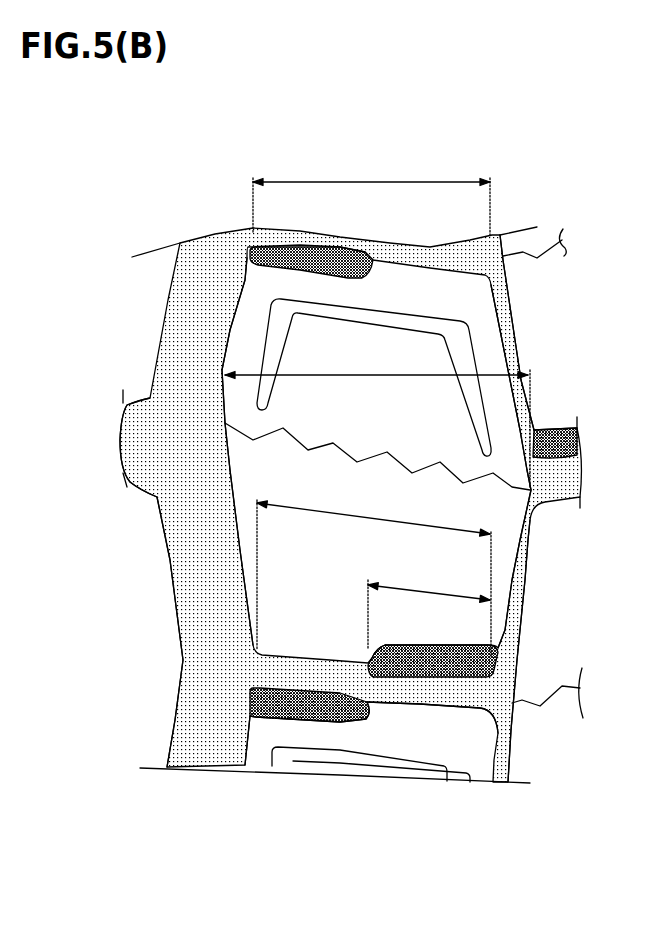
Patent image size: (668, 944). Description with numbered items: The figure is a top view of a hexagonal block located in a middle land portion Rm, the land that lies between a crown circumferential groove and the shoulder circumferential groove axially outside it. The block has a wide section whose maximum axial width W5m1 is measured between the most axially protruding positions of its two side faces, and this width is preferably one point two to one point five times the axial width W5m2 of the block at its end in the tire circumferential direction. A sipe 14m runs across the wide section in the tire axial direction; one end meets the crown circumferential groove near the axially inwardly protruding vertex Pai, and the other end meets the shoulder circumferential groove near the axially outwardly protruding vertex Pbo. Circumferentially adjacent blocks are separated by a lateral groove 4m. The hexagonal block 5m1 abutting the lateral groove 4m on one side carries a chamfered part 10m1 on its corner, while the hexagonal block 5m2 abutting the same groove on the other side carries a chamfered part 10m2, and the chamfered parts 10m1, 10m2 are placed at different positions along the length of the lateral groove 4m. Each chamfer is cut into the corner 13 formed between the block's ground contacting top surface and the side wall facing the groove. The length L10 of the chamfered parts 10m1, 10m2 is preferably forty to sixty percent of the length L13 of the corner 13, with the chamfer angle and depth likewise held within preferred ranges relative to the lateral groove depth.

The axial width of hexagonal block at circumferential end W5m2 is at (307, 180).
The middle land portion Rm is at (371, 228).
The axially outwardly protruding vertex Pbo is at (207, 420).
The sipe 14m is at (400, 462).
The maximum axial width of hexagonal block W5m1 is at (352, 378).
The axially inwardly protruding vertex Pai is at (540, 487).
The length of the corner L13 is at (373, 520).
The hexagonal block 5m1 is at (507, 512).
The length of the chamfered part L10 is at (430, 593).
The corner 13 is at (305, 650).
The hexagonal block 5m2 is at (232, 737).
The chamfered part 10m2 is at (310, 708).
The lateral groove 4m is at (410, 693).
The chamfered part 10m1 is at (445, 662).